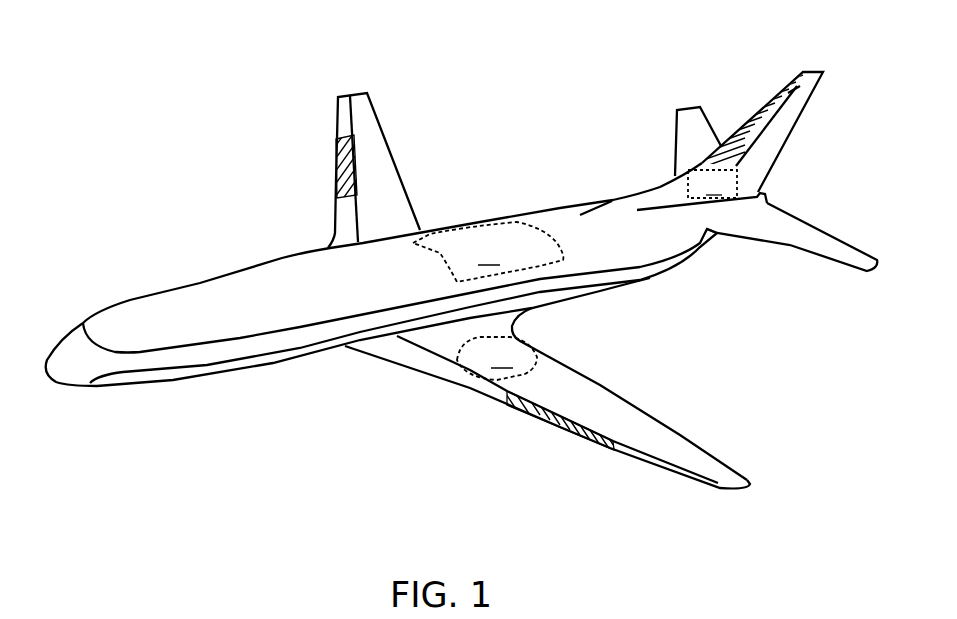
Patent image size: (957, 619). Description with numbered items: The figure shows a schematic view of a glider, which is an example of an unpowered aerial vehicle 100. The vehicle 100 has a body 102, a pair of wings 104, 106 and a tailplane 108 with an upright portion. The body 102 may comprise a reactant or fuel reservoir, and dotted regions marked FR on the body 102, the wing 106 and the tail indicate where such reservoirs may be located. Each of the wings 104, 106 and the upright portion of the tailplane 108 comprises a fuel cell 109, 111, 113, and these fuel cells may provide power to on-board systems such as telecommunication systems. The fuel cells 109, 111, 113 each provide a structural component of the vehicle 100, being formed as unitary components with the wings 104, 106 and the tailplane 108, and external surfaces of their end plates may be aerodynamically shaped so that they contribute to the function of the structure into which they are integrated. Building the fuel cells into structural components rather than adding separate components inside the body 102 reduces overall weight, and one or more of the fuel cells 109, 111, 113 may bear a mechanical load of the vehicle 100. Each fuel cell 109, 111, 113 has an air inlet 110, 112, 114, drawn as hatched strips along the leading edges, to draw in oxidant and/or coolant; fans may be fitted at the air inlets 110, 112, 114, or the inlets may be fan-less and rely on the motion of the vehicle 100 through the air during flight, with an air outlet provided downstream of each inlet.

The unpowered aerial vehicle 100 is at (108, 139).
The body 102 is at (132, 387).
The wing 104 is at (353, 93).
The wing 106 is at (737, 488).
The tailplane 108 is at (798, 73).
The fuel cell 109 is at (372, 155).
The air inlet 110 is at (338, 163).
The fuel cell 111 is at (570, 400).
The air inlet 112 is at (543, 422).
The fuel cell 113 is at (757, 143).
The air inlet 114 is at (750, 110).